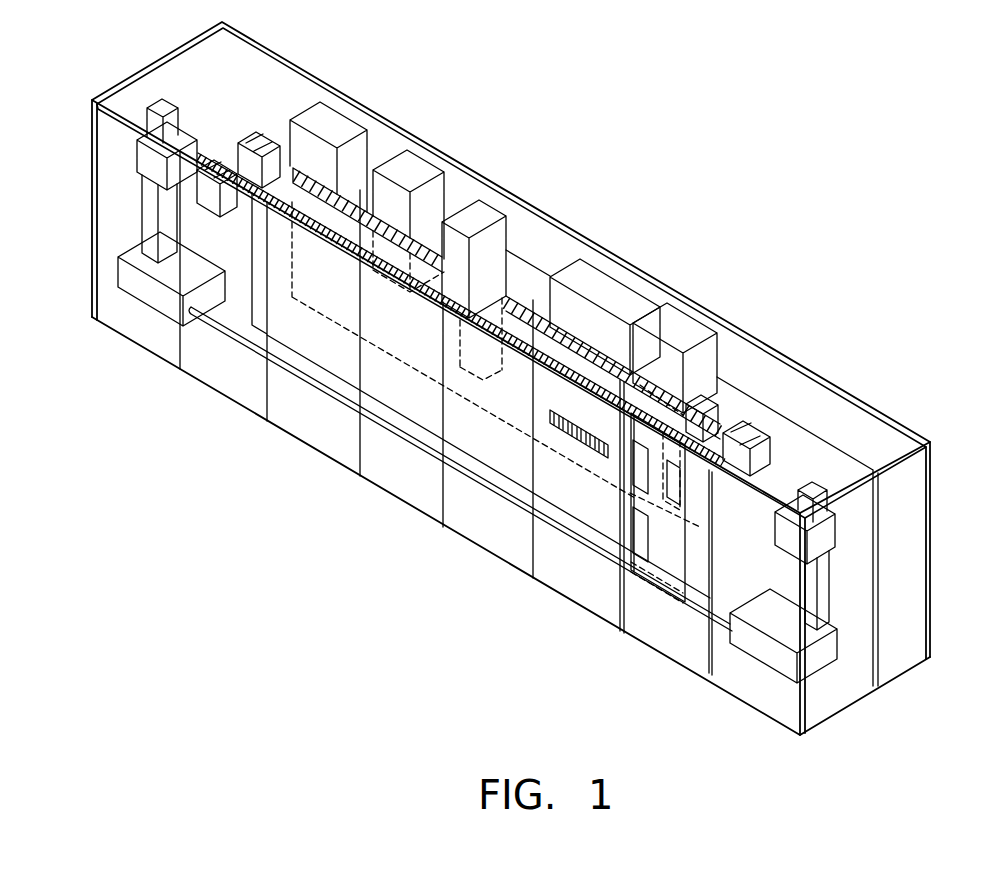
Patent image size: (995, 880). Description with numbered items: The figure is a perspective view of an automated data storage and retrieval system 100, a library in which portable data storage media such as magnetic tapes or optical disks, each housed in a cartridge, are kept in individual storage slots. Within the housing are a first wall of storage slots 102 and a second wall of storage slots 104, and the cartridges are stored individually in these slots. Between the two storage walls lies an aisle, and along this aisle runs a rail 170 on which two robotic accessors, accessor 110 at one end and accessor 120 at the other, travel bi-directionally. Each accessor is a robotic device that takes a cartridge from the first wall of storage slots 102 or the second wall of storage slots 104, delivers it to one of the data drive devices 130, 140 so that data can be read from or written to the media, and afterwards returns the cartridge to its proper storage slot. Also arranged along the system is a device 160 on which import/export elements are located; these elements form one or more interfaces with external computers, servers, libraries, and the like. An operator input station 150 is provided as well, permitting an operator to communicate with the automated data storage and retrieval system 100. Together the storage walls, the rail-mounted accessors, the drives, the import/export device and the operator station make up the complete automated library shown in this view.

The automated data storage and retrieval system 100 is at (432, 607).
The first wall of storage slots 102 is at (363, 193).
The second wall of storage slots 104 is at (297, 337).
The accessor 110 is at (142, 157).
The accessor 120 is at (835, 540).
The data drive device 130 is at (494, 208).
The data drive device 140 is at (538, 238).
The operator input station 150 is at (430, 170).
The device with import/export elements 160 is at (320, 108).
The rail 170 is at (392, 428).